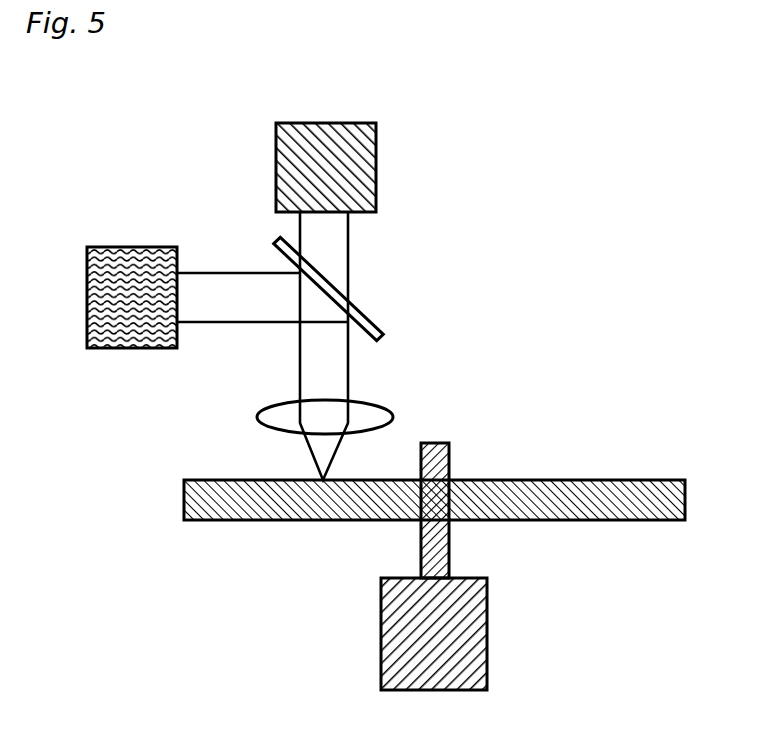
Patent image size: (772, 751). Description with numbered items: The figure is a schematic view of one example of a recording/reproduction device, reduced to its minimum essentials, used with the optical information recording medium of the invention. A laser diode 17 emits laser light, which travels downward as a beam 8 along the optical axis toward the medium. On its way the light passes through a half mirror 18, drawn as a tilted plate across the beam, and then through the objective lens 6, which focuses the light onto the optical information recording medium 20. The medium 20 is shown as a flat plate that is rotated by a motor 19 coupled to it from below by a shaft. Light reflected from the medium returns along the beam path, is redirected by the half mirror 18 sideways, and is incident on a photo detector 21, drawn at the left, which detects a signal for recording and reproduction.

The laser diode 17 is at (376, 166).
The laser beam 8 is at (349, 246).
The half mirror 18 is at (358, 311).
The objective lens 6 is at (393, 411).
The optical information recording medium 20 is at (515, 480).
The motor 19 is at (487, 605).
The photo detector 21 is at (122, 348).